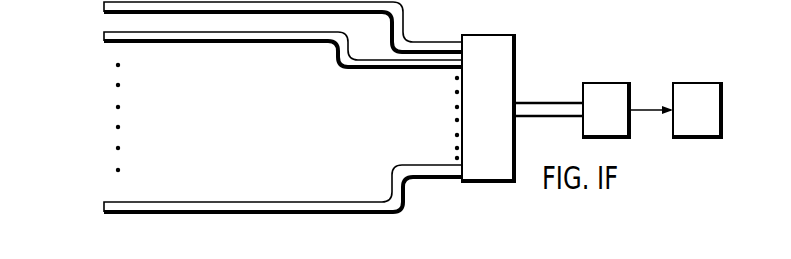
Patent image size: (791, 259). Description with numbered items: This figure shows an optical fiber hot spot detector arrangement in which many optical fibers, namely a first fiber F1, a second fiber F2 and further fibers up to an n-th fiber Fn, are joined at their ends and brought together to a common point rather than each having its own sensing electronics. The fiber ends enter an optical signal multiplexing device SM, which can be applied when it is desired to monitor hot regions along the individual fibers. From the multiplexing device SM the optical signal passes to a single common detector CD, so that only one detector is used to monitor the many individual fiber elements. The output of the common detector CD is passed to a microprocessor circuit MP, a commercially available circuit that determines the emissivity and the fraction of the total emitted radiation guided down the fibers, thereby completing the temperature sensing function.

The optical fiber F1 is at (102, 1).
The optical fiber F2 is at (103, 44).
The optical fiber Fn is at (117, 200).
The optical signal multiplexing device SM is at (497, 173).
The common detector CD is at (606, 110).
The microprocessor circuit MP is at (697, 110).